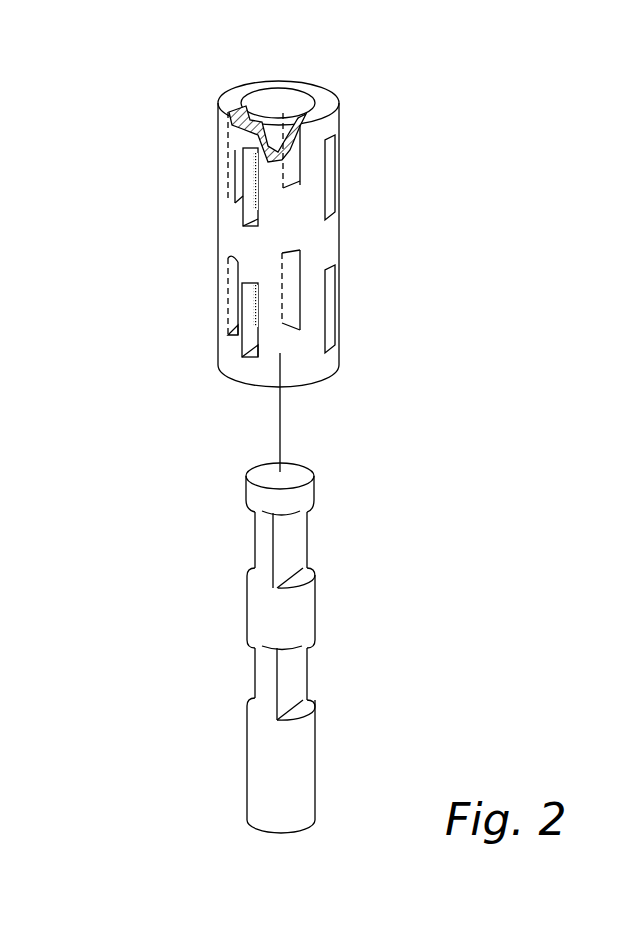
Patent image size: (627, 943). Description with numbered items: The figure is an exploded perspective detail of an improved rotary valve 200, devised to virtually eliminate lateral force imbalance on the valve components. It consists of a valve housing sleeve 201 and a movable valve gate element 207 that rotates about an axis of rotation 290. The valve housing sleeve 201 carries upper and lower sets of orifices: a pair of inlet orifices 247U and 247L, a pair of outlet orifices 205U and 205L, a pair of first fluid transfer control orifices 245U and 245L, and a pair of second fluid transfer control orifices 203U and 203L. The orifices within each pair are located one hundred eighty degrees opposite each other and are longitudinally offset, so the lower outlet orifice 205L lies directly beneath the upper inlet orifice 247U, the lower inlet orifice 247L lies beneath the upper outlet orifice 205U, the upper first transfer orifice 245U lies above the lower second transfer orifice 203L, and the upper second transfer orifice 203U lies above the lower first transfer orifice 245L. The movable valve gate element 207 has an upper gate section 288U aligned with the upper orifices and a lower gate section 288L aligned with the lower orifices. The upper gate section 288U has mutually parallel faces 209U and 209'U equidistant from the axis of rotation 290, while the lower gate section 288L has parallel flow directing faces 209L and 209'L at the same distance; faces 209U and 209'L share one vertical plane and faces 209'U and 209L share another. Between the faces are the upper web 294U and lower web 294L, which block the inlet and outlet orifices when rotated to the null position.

The rotary valve 200 is at (514, 405).
The valve housing sleeve 201 is at (356, 120).
The upper second fluid transfer control orifice 203U is at (330, 186).
The lower second fluid transfer control orifice 203L is at (227, 300).
The upper outlet orifice 205U is at (243, 212).
The lower outlet orifice 205L is at (292, 281).
The upper first fluid transfer control orifice 245U is at (227, 167).
The lower first fluid transfer control orifice 245L is at (330, 325).
The upper inlet orifice 247U is at (283, 113).
The lower inlet orifice 247L is at (252, 332).
The axis of rotation 290 is at (290, 423).
The upper gate section 288U is at (337, 520).
The lower gate section 288L is at (212, 674).
The flow directing face 209U is at (280, 562).
The flow directing face 209L is at (250, 663).
The flow directing face 209'U is at (221, 545).
The flow directing face 209'L is at (346, 684).
The upper web 294U is at (263, 545).
The lower web 294L is at (260, 668).
The movable valve gate element 207 is at (335, 738).